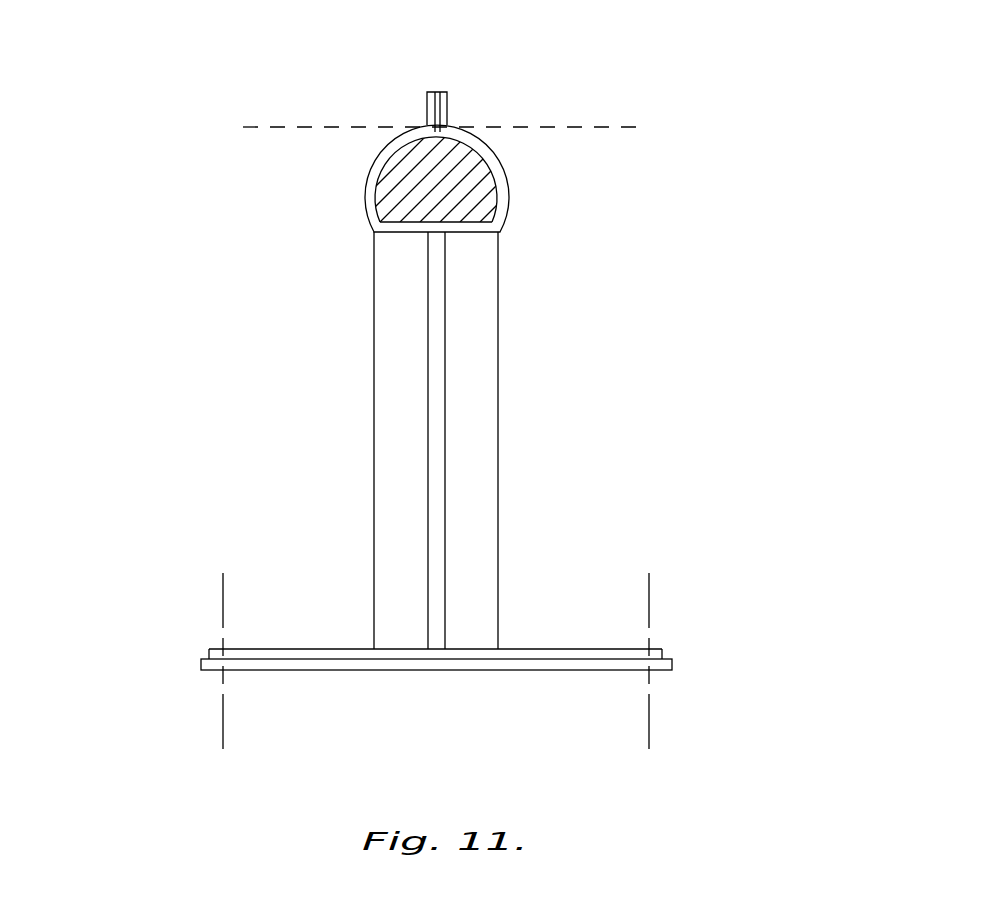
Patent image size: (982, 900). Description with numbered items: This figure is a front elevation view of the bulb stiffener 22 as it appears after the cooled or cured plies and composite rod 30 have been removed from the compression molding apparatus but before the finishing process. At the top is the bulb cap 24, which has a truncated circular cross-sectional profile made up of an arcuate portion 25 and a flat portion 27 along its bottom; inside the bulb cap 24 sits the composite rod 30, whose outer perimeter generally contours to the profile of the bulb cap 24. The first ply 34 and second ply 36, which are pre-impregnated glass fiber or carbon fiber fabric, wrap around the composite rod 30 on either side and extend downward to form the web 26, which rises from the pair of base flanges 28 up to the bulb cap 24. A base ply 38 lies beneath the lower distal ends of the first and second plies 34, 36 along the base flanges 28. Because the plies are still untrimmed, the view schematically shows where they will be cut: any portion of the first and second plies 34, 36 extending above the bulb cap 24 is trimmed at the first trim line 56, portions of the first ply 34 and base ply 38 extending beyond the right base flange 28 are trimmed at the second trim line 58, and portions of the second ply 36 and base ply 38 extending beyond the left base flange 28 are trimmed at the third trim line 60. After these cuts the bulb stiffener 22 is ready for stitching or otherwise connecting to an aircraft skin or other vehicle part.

The bulb stiffener 22 is at (237, 248).
The bulb cap 24 is at (504, 180).
The arcuate portion 25 is at (382, 148).
The sinusoidal web 26 is at (445, 378).
The flat portion 27 is at (457, 226).
The base flanges 28 is at (317, 650).
The composite rod 30 is at (400, 193).
The first ply 34 is at (444, 97).
The second ply 36 is at (427, 92).
The base ply 38 is at (203, 668).
The first trim line 56 is at (593, 127).
The second trim line 58 is at (649, 727).
The third trim line 60 is at (222, 727).